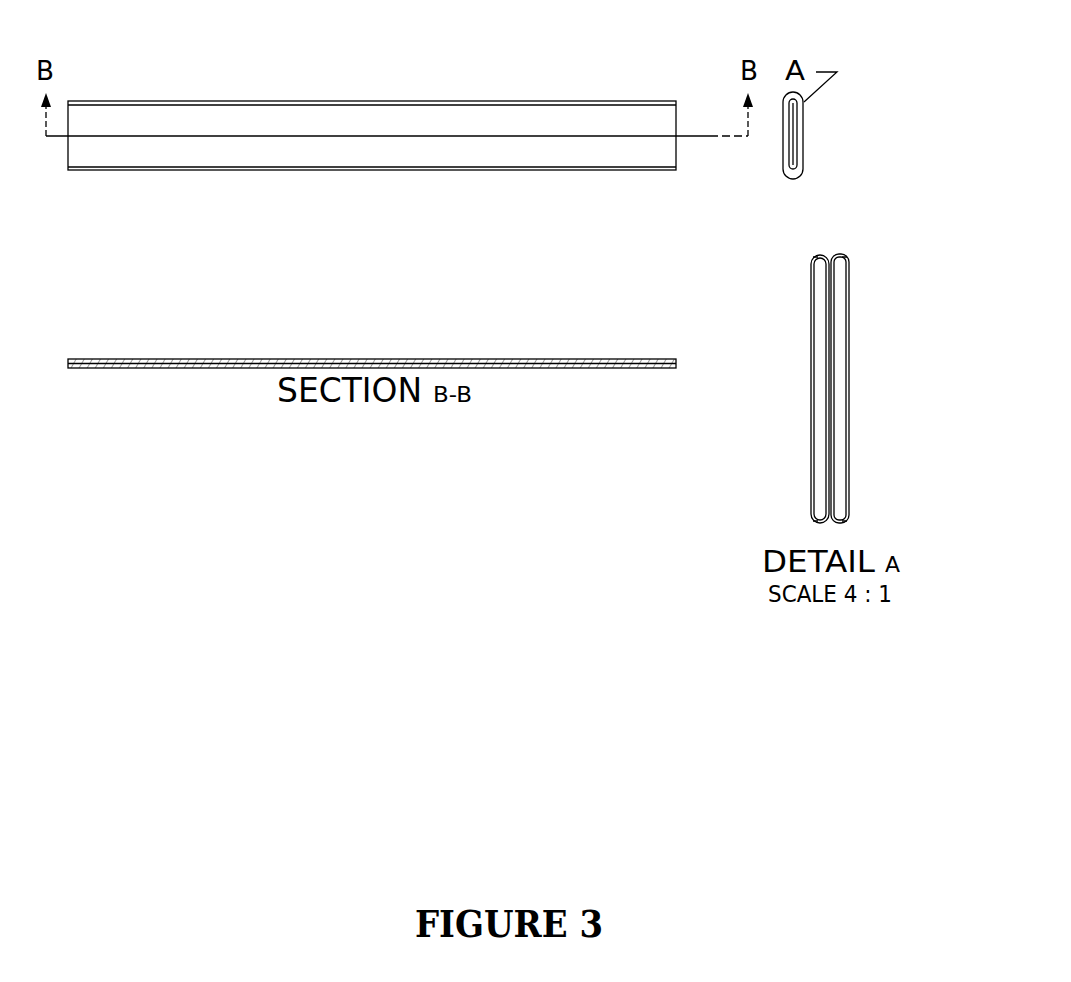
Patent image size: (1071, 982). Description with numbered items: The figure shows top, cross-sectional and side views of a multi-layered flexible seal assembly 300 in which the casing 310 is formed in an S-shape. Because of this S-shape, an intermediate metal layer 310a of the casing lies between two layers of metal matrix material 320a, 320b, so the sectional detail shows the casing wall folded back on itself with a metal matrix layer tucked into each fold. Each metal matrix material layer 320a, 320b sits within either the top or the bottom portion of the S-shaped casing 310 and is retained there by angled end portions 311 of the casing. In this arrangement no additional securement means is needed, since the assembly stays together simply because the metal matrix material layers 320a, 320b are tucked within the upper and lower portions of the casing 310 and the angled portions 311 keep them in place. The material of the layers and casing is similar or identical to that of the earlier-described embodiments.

The seal assembly 300 is at (745, 327).
The casing 310 is at (472, 120).
The intermediate metal layer 310a is at (832, 428).
The angled end portions 311 is at (842, 257).
The metal matrix material layer 320a is at (838, 373).
The metal matrix material layer 320b is at (823, 395).